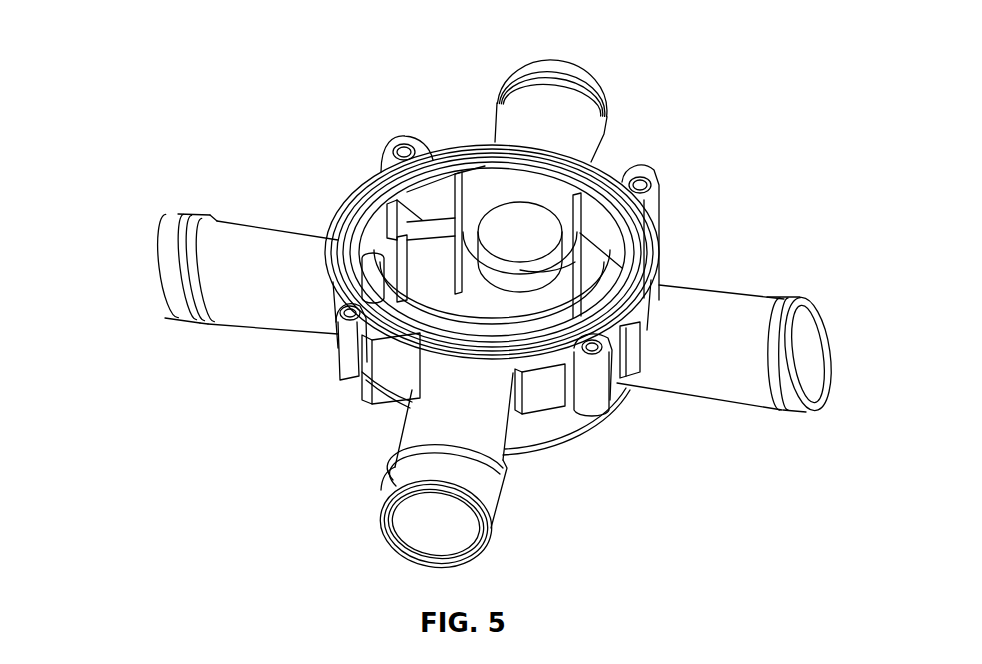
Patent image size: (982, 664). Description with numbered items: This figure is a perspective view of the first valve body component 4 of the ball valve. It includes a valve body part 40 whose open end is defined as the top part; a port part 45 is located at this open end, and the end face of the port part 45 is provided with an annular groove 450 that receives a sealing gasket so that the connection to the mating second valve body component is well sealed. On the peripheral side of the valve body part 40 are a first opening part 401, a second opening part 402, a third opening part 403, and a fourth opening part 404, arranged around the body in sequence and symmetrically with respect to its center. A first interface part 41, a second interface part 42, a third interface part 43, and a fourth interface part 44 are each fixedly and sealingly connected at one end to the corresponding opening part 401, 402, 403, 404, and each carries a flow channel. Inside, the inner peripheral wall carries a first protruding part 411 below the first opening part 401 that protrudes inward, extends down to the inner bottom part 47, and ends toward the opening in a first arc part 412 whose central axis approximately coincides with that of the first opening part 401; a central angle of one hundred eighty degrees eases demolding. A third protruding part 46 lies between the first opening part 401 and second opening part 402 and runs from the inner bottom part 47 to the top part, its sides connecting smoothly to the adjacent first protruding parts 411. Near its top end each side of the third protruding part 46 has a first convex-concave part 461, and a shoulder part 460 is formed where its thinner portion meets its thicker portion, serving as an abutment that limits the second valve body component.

The first valve body component 4 is at (461, 297).
The valve body part 40 is at (563, 430).
The first interface part 41 is at (560, 93).
The second interface part 42 is at (217, 255).
The third interface part 43 is at (420, 452).
The fourth interface part 44 is at (750, 338).
The port part 45 is at (660, 195).
The third protruding part 46 is at (435, 252).
The inner bottom part 47 is at (368, 357).
The first opening part 401 is at (540, 203).
The second opening part 402 is at (360, 247).
The third opening part 403 is at (413, 393).
The fourth opening part 404 is at (638, 310).
The first protruding part 411 is at (655, 278).
The first arc part 412 is at (572, 258).
The annular groove 450 is at (365, 296).
The shoulder part 460 is at (380, 167).
The first convex-concave part 461 is at (378, 186).